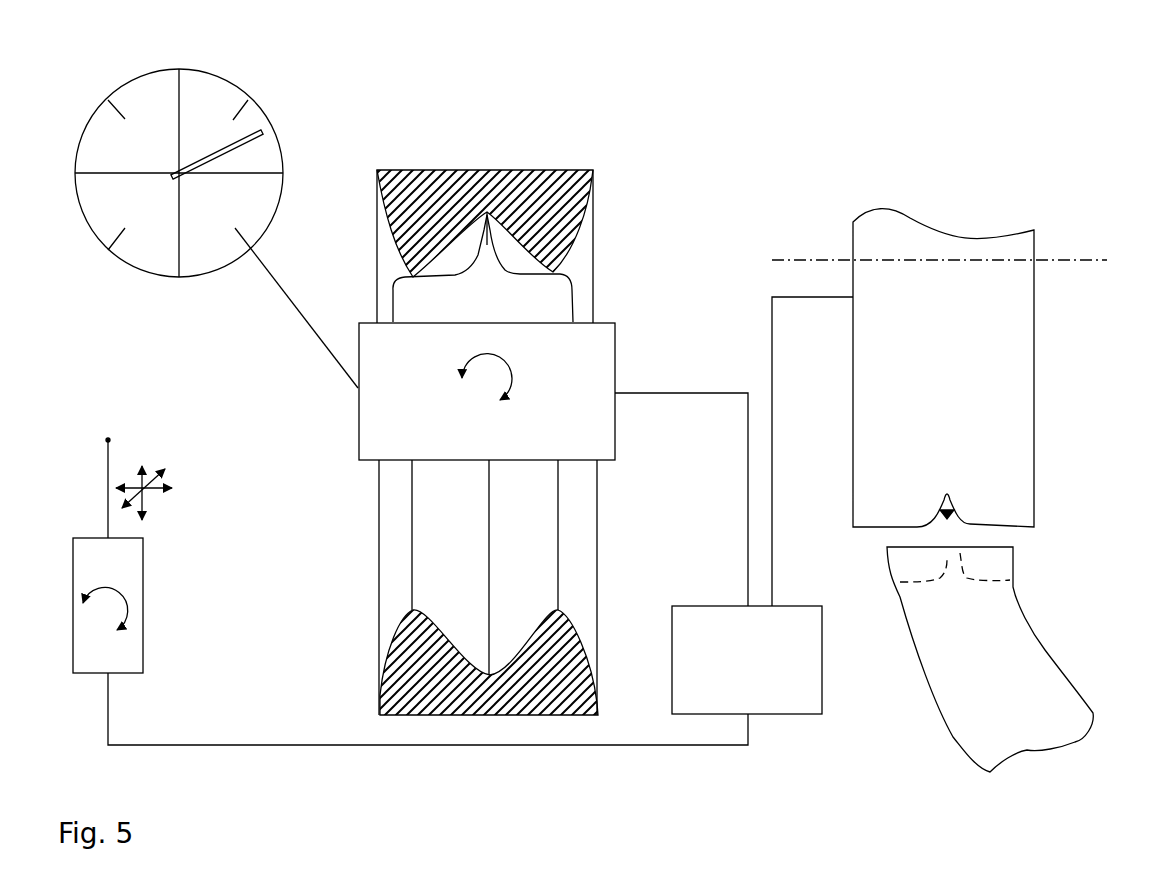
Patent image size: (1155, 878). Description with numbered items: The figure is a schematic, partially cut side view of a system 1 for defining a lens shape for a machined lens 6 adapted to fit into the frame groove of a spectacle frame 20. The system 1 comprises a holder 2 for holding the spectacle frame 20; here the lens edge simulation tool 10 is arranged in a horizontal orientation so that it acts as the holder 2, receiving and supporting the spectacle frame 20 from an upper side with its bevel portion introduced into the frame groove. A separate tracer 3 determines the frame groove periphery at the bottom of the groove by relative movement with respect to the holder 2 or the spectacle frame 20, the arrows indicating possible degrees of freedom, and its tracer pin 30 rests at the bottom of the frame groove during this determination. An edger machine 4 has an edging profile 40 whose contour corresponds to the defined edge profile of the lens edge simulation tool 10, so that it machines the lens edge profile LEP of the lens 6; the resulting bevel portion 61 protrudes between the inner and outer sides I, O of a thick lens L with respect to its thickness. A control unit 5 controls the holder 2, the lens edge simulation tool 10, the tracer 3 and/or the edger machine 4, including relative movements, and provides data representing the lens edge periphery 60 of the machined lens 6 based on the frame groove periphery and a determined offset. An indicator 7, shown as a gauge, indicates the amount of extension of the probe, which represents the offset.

The system 1 is at (947, 70).
The holder 2 is at (593, 343).
The tracer 3 is at (132, 573).
The tracer pin 30 is at (105, 438).
The edger machine 4 is at (1017, 290).
The edging profile 40 is at (960, 512).
The control unit 5 is at (787, 699).
The lens 6 is at (1032, 614).
The lens edge periphery 60 is at (948, 545).
The bevel portion 61 is at (942, 557).
The indicator 7 is at (88, 213).
The lens edge simulation tool 10 is at (553, 300).
The spectacle frame 20 is at (567, 183).
The lens edge profile LEP is at (1013, 547).
The thick lens L is at (898, 567).
The inner side I is at (1069, 673).
The outer side O is at (950, 740).